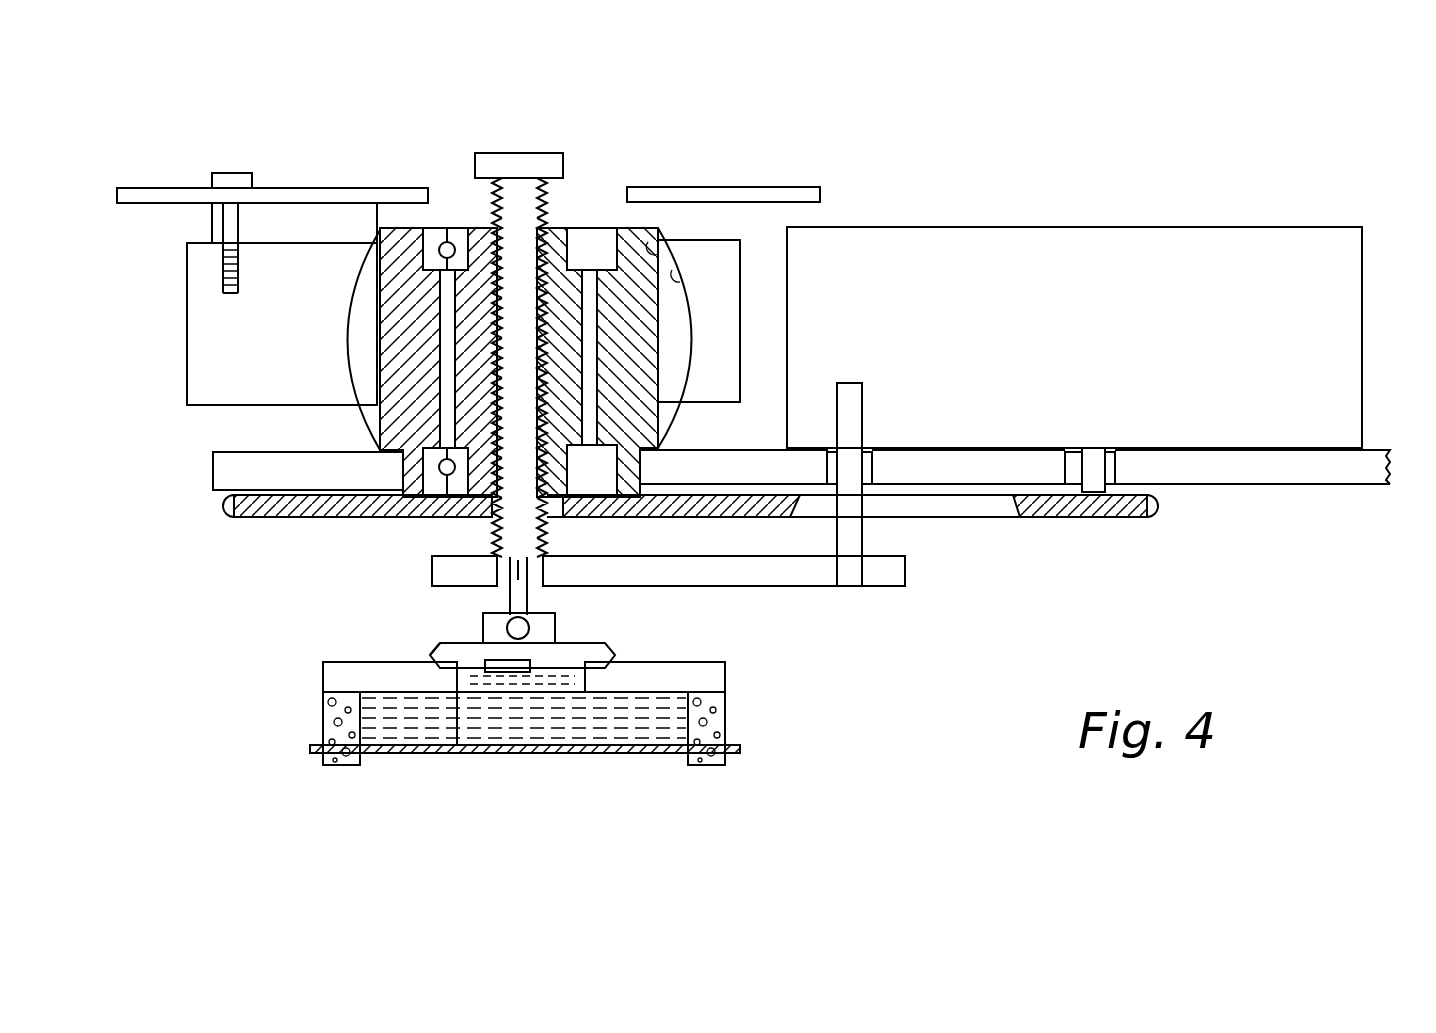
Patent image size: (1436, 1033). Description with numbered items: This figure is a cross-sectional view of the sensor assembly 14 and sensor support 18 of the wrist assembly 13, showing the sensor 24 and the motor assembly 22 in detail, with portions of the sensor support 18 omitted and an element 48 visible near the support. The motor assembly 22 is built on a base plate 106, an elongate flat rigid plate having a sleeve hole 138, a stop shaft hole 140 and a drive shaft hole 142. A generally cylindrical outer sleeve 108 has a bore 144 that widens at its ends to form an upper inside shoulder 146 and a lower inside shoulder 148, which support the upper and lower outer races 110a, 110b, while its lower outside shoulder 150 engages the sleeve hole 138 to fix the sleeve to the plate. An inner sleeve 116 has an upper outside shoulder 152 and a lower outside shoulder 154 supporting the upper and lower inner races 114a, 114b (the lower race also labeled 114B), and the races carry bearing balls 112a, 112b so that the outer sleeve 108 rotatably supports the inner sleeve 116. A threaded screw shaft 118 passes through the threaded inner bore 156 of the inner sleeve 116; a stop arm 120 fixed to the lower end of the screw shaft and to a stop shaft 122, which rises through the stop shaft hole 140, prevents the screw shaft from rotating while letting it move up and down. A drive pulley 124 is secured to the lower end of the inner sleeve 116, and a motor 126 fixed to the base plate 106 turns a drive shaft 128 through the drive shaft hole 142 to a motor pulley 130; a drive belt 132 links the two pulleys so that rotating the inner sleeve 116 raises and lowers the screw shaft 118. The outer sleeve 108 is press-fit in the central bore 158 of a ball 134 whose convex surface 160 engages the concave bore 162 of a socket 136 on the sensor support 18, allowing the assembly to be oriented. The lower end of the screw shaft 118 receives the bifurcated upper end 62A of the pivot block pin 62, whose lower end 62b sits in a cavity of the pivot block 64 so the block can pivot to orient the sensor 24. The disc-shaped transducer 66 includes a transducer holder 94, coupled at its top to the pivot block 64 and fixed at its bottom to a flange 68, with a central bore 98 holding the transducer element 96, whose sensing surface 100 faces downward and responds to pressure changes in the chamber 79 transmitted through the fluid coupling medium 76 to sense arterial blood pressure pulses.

The wrist assembly 13 is at (116, 156).
The sensor assembly 14 is at (126, 279).
The sensor support 18 is at (182, 184).
The motor assembly 22 is at (184, 330).
The sensor 24 is at (760, 742).
The bolt 48 is at (212, 225).
The pivot block pin 62 is at (528, 596).
The upper end of pivot block pin 62A is at (440, 575).
The lower end of pivot block pin 62b is at (567, 635).
The pivot block 64 is at (483, 632).
The transducer 66 is at (632, 644).
The flange 68 is at (727, 675).
The fluid coupling medium 76 is at (524, 718).
The chamber 79 is at (581, 747).
The transducer holder 94 is at (427, 655).
The transducer element 96 is at (452, 740).
The central bore 98 is at (553, 670).
The sensing surface 100 is at (500, 670).
The base plate 106 is at (1359, 482).
The outer sleeve 108 is at (385, 298).
The upper outer race 110a is at (405, 228).
The lower outer race 110b is at (320, 518).
The bearing balls 112a is at (430, 228).
The bearing balls 112b is at (572, 493).
The upper inner race 114a is at (452, 228).
The lower inner race 114B is at (440, 380).
The lower inner race 114b is at (597, 380).
The inner sleeve 116 is at (553, 228).
The threaded screw shaft 118 is at (480, 153).
The stop arm 120 is at (900, 586).
The stop shaft 122 is at (865, 538).
The drive pulley 124 is at (258, 520).
The motor 126 is at (1300, 222).
The drive shaft 128 is at (1115, 470).
The motor pulley 130 is at (1100, 510).
The drive belt 132 is at (228, 505).
The ball 134 is at (345, 395).
The socket 136 is at (187, 374).
The sleeve hole 138 is at (645, 468).
The stop shaft hole 140 is at (880, 465).
The drive shaft hole 142 is at (1115, 458).
The bore 144 is at (395, 345).
The upper inside shoulder 146 is at (423, 240).
The lower inside shoulder 148 is at (430, 462).
The lower outside shoulder 150 is at (400, 465).
The upper outside shoulder 152 is at (588, 228).
The lower outside shoulder 154 is at (425, 488).
The threaded inner bore 156 is at (478, 492).
The central bore 158 is at (718, 240).
The convex surface 160 is at (655, 250).
The concave bore 162 is at (682, 418).